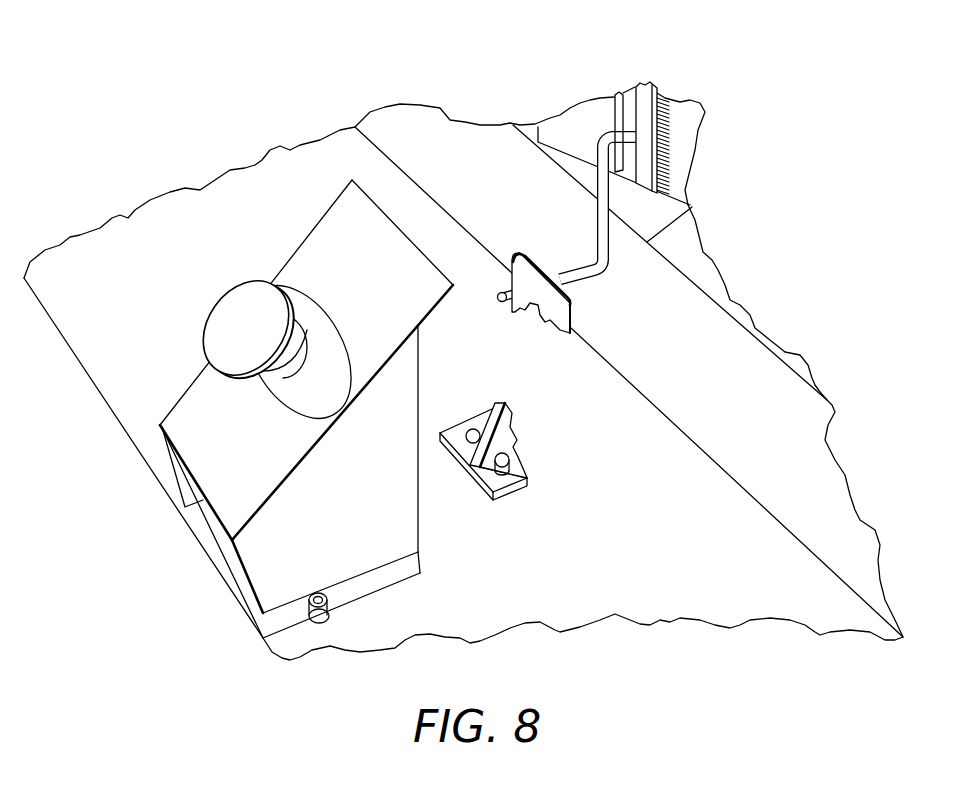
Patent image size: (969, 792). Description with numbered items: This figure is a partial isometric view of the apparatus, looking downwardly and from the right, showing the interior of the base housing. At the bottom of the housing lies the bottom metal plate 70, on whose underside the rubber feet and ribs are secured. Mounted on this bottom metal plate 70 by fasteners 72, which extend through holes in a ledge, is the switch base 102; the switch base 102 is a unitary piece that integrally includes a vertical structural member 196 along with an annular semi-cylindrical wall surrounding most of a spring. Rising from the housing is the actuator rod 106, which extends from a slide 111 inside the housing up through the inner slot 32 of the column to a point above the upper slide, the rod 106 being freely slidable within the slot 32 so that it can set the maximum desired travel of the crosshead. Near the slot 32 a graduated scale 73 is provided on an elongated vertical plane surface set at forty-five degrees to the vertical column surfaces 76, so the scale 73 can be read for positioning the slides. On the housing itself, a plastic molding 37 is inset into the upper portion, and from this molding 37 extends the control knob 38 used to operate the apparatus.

The inner slot 32 is at (680, 110).
The plastic molding 37 is at (385, 309).
The control knob 38 is at (220, 345).
The bottom metal plate 70 is at (663, 606).
The fasteners 72 is at (523, 451).
The graduated scale 73 is at (677, 120).
The vertical column surfaces 76 is at (640, 158).
The switch base 102 is at (471, 525).
The actuator rod 106 is at (605, 250).
The slide 111 is at (563, 312).
The vertical structural member 196 is at (510, 424).